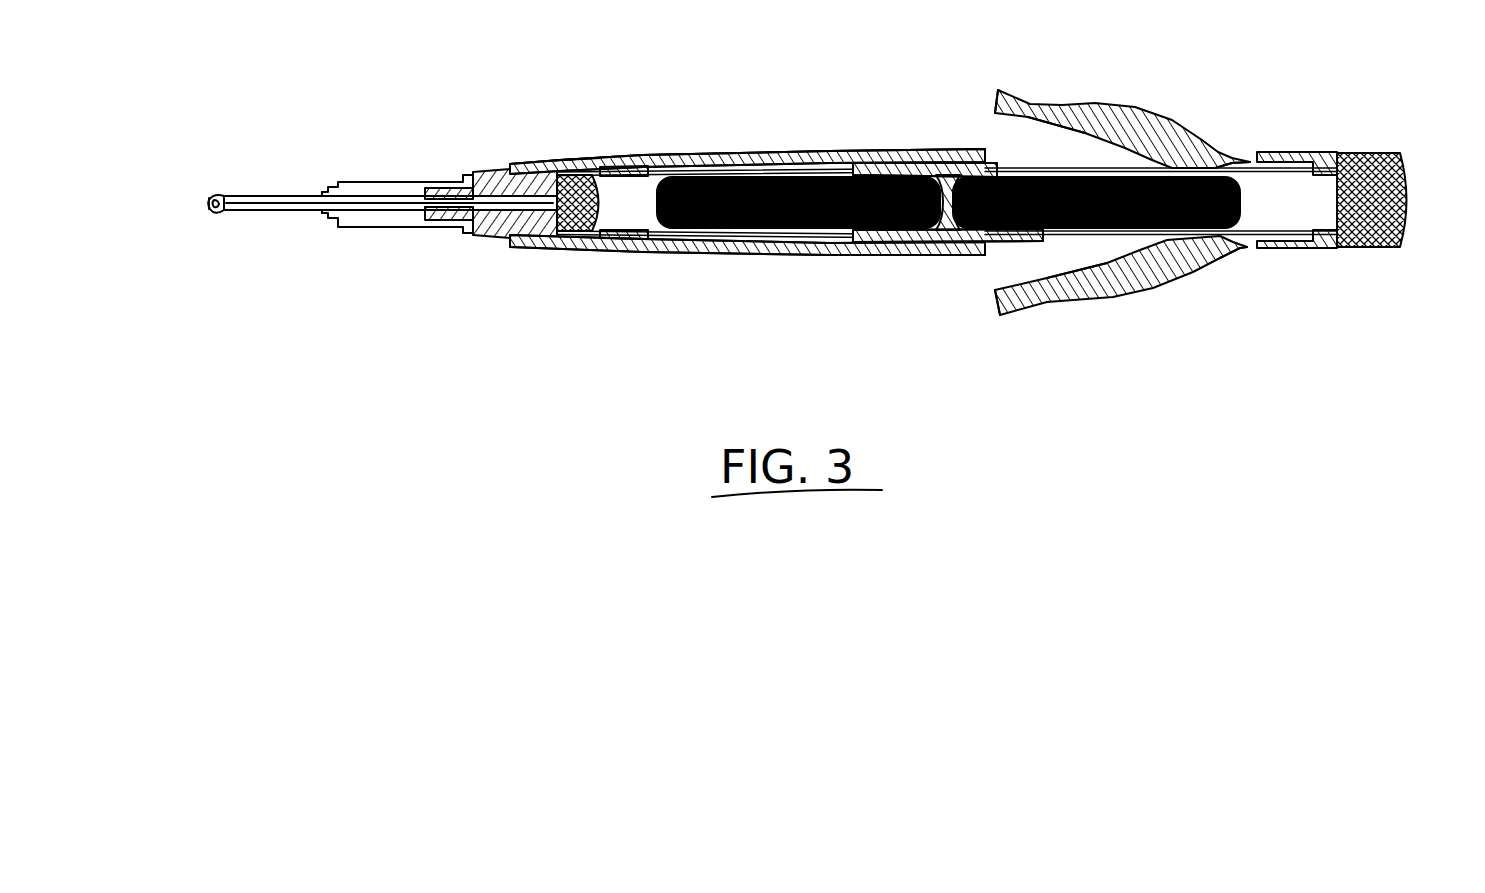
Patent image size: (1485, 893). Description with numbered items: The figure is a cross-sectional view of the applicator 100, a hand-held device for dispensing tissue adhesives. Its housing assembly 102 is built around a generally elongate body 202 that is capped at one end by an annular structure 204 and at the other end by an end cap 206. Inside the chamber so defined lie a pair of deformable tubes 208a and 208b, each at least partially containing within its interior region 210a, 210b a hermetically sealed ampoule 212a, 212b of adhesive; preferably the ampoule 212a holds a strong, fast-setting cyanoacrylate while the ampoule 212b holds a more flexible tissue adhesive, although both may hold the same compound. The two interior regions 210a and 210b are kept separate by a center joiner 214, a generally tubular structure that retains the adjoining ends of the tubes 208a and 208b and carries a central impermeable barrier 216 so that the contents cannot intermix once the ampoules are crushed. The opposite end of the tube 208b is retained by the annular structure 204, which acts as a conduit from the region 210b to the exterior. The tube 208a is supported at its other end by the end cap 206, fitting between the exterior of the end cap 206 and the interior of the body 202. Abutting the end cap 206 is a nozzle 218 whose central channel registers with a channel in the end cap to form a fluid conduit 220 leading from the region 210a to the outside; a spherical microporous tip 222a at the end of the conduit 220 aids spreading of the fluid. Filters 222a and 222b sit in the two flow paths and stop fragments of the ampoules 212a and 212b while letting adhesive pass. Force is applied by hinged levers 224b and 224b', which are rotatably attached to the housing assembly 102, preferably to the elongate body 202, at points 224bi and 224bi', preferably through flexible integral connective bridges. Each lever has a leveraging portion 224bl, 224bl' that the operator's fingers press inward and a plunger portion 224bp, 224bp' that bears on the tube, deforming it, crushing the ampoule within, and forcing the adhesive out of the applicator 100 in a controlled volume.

The applicator 100 is at (578, 160).
The housing assembly 102 is at (560, 158).
The elongate body 202 is at (688, 162).
The annular structure 204 is at (1330, 157).
The end cap 206 is at (487, 230).
The deformable tube 208a is at (742, 229).
The deformable tube 208b is at (1297, 166).
The interior region 210a is at (622, 226).
The interior region 210b is at (1293, 218).
The ampoule 212a is at (643, 167).
The ampoule 212b is at (1278, 249).
The center joiner 214 is at (922, 240).
The central impermeable barrier 216 is at (943, 173).
The nozzle 218 is at (355, 182).
The fluid conduit 220 is at (291, 211).
The filter 222a is at (211, 212).
The filter 222b is at (1406, 247).
The hinged lever 224b is at (1122, 105).
The leveraging portion 224bl is at (996, 73).
The plunger portion 224bp is at (1081, 143).
The attachment point 224bi is at (1257, 130).
The hinged lever 224b' is at (1121, 306).
The leveraging portion 224bl' is at (999, 342).
The plunger portion 224bp' is at (1098, 259).
The attachment point 224bi' is at (1208, 285).